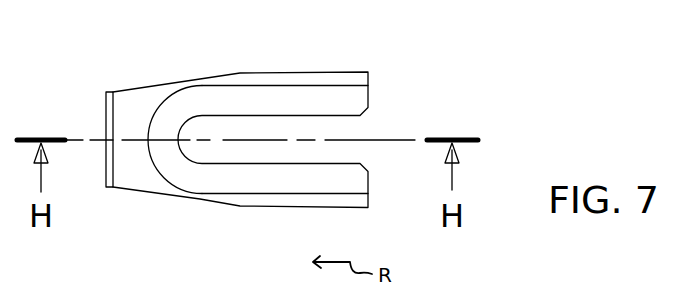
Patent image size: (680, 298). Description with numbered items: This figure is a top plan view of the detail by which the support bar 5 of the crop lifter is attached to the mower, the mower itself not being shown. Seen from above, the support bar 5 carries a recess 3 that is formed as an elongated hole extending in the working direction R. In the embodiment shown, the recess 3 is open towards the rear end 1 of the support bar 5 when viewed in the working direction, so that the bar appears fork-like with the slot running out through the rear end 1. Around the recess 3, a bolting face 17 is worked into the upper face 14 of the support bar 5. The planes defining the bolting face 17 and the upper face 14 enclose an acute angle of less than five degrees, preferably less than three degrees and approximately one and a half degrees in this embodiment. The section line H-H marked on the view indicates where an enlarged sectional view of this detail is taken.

The rear end 1 is at (425, 78).
The recess 3 is at (285, 130).
The support bar 5 is at (168, 84).
The upper face 14 is at (158, 183).
The bolting face 17 is at (228, 103).